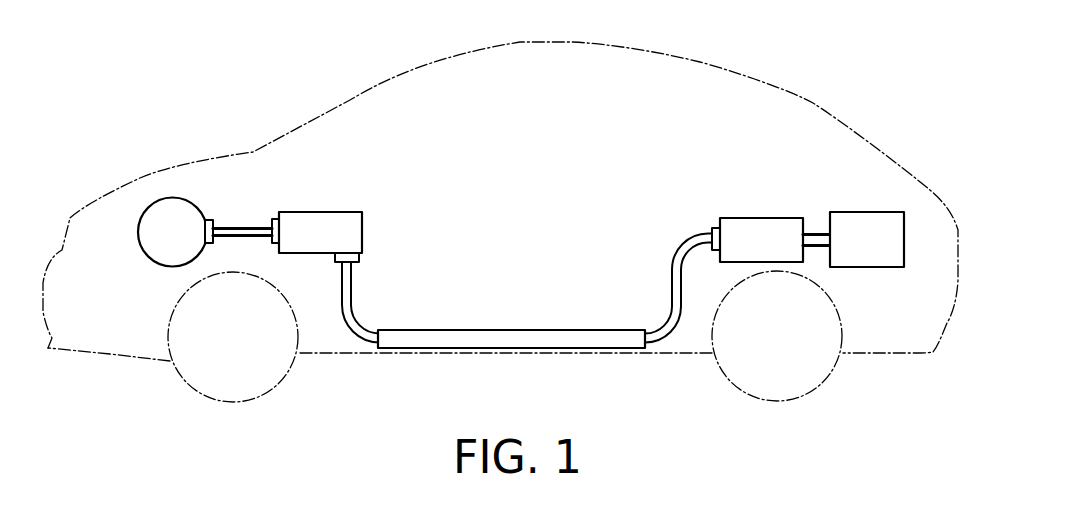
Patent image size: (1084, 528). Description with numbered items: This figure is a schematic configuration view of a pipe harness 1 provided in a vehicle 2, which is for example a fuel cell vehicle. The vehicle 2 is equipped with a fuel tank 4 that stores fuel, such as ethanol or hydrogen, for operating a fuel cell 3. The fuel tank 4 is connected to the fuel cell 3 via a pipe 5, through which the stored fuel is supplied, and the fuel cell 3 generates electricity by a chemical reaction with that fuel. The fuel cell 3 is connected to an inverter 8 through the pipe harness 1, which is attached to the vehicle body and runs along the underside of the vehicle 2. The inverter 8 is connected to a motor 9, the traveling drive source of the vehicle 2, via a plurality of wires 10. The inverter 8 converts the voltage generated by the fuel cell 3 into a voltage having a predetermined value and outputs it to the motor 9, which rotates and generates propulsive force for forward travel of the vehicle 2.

The pipe harness 1 is at (418, 348).
The vehicle 2 is at (743, 76).
The fuel cell 3 is at (761, 218).
The fuel tank 4 is at (868, 212).
The pipe 5 is at (815, 232).
The inverter 8 is at (315, 212).
The motor 9 is at (140, 245).
The wires 10 is at (242, 223).